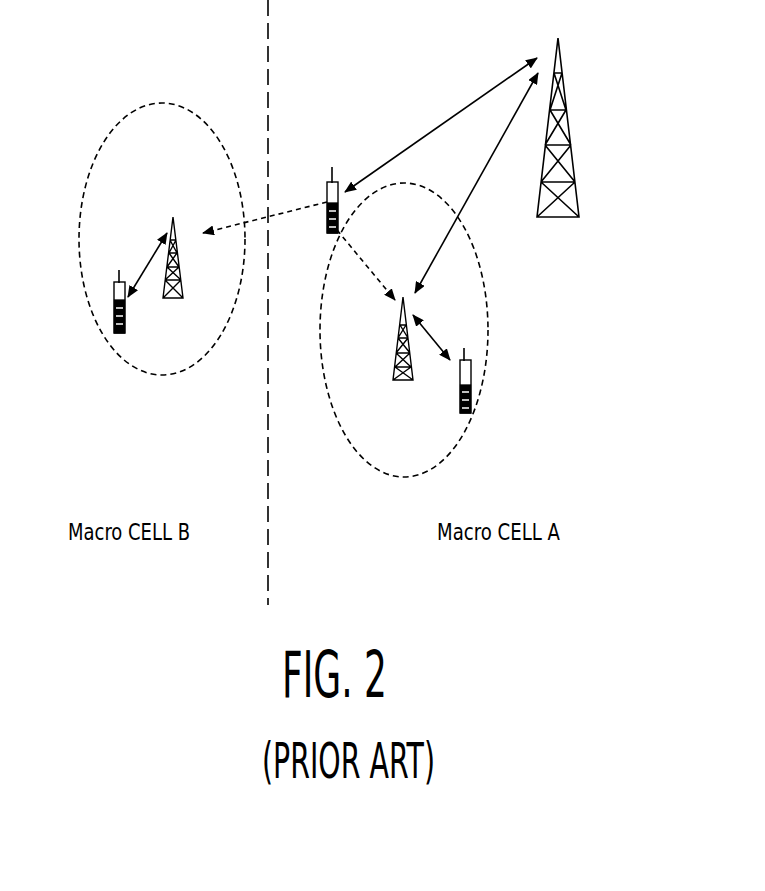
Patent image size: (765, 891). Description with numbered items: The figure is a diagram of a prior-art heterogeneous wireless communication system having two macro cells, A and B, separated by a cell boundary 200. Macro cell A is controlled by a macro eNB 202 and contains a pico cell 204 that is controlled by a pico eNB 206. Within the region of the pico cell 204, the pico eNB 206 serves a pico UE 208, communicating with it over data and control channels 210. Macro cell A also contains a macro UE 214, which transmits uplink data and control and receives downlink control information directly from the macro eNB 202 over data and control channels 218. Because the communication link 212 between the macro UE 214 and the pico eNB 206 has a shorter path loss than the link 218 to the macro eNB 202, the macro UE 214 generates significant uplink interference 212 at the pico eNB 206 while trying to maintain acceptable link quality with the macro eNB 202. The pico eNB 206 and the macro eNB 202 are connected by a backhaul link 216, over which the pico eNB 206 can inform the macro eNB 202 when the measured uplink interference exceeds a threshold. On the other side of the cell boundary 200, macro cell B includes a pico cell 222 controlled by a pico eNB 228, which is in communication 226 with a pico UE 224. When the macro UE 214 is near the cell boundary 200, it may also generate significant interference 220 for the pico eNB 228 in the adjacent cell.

The cell boundary 200 is at (270, 548).
The macro eNB 202 is at (574, 152).
The pico cell 204 is at (487, 287).
The pico eNB 206 is at (392, 360).
The pico UE 208 is at (472, 392).
The data and control channels 210 is at (423, 320).
The communication link / UL interference 212 is at (370, 246).
The macro UE 214 is at (328, 233).
The backhaul link 216 is at (477, 188).
The data and control channels 218 is at (475, 97).
The interference 220 is at (293, 203).
The pico cell 222 is at (97, 151).
The pico UE 224 is at (113, 304).
The communication 226 is at (160, 248).
The pico eNB 228 is at (177, 300).